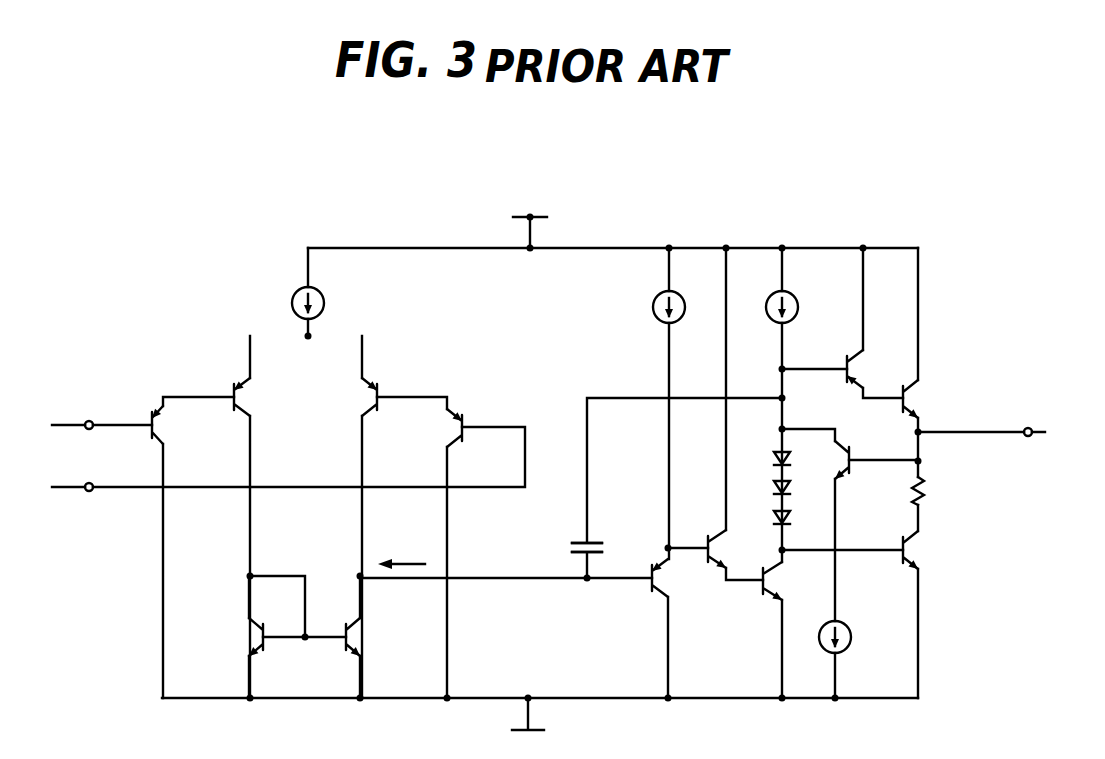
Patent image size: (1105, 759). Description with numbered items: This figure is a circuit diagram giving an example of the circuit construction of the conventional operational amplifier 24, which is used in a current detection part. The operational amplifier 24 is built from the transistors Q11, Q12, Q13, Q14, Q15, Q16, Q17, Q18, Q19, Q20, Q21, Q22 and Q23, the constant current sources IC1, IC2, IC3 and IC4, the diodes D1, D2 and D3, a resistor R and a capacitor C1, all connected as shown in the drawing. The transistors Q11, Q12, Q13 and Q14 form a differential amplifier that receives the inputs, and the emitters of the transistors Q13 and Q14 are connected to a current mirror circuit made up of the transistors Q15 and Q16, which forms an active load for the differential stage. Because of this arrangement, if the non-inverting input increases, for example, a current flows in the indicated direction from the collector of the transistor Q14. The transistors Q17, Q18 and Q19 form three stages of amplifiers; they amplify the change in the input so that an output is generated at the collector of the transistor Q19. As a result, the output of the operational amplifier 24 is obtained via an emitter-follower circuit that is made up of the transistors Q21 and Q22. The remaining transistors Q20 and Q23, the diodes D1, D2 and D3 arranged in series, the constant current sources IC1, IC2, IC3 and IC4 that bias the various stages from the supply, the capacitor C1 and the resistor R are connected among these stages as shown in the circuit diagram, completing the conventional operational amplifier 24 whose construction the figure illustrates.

The operational amplifier 24 is at (735, 139).
The transistor Q11 is at (183, 425).
The transistor Q12 is at (423, 429).
The transistor Q13 is at (265, 397).
The transistor Q14 is at (346, 397).
The transistor Q15 is at (226, 637).
The transistor Q16 is at (378, 637).
The transistor Q17 is at (640, 596).
The transistor Q18 is at (712, 573).
The transistor Q19 is at (753, 606).
The transistor Q20 is at (865, 477).
The transistor Q21 is at (939, 397).
The transistor Q22 is at (939, 550).
The transistor Q23 is at (876, 369).
The diode D1 is at (759, 454).
The diode D2 is at (759, 489).
The diode D3 is at (759, 520).
The constant current source IC1 is at (336, 292).
The constant current source IC2 is at (641, 307).
The constant current source IC3 is at (805, 307).
The constant current source IC4 is at (859, 639).
The capacitor C1 is at (561, 549).
The resistor R is at (928, 491).